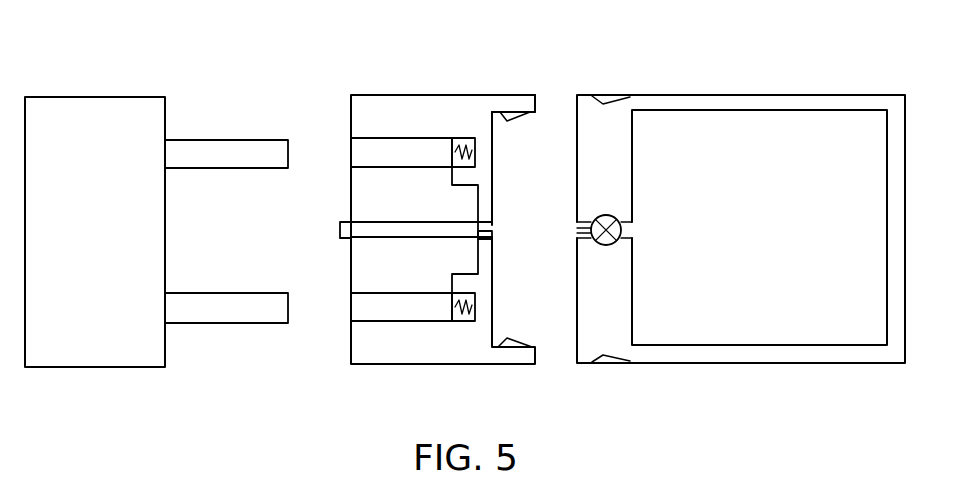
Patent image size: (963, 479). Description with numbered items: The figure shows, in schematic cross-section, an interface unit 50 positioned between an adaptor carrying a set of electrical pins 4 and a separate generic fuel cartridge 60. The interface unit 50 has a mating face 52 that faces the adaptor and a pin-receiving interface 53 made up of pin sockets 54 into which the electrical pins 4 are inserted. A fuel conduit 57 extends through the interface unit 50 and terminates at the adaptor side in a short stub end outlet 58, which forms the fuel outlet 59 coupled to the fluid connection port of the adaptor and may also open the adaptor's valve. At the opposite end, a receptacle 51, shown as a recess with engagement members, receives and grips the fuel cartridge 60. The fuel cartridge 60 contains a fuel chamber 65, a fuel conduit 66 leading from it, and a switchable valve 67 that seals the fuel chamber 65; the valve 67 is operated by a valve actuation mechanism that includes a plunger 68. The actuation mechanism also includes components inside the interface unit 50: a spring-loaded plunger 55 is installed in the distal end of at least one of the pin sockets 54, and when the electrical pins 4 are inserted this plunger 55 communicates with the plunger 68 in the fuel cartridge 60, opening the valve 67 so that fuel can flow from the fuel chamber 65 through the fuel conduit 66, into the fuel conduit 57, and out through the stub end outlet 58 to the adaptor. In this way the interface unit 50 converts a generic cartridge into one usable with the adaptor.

The electrical pins 4 is at (231, 140).
The interface unit 50 is at (400, 94).
The receptacle 51 is at (513, 94).
The mating face 52 is at (351, 118).
The pin-receiving interface 53 is at (349, 158).
The pin sockets 54 is at (388, 151).
The spring-loaded plunger 55 is at (490, 233).
The fuel conduit 57 is at (402, 230).
The stub end outlet 58 is at (340, 230).
The fuel outlet 59 is at (342, 240).
The fuel cartridge 60 is at (832, 93).
The fuel chamber 65 is at (838, 345).
The fuel conduit 66 is at (622, 231).
The switchable valve 67 is at (609, 241).
The plunger 68 is at (582, 222).